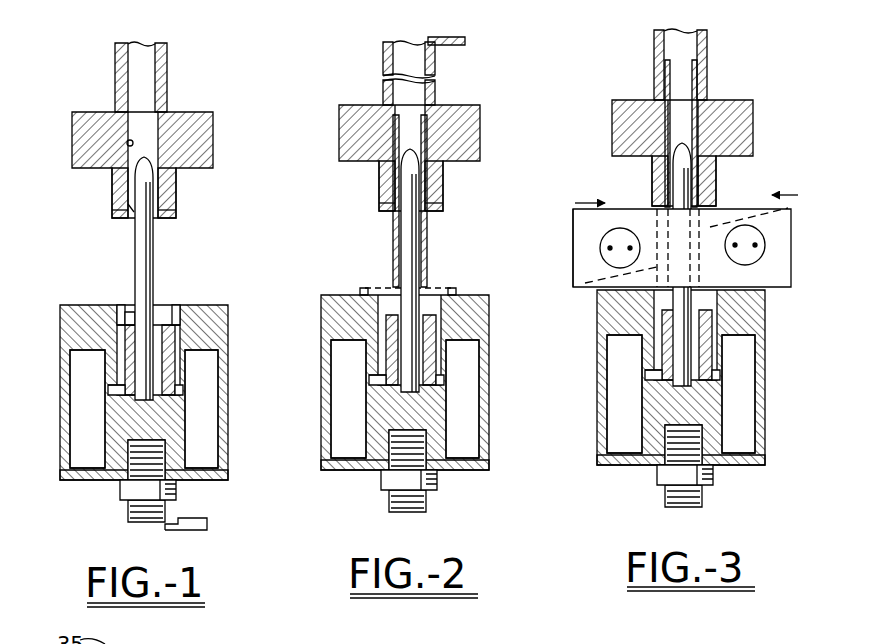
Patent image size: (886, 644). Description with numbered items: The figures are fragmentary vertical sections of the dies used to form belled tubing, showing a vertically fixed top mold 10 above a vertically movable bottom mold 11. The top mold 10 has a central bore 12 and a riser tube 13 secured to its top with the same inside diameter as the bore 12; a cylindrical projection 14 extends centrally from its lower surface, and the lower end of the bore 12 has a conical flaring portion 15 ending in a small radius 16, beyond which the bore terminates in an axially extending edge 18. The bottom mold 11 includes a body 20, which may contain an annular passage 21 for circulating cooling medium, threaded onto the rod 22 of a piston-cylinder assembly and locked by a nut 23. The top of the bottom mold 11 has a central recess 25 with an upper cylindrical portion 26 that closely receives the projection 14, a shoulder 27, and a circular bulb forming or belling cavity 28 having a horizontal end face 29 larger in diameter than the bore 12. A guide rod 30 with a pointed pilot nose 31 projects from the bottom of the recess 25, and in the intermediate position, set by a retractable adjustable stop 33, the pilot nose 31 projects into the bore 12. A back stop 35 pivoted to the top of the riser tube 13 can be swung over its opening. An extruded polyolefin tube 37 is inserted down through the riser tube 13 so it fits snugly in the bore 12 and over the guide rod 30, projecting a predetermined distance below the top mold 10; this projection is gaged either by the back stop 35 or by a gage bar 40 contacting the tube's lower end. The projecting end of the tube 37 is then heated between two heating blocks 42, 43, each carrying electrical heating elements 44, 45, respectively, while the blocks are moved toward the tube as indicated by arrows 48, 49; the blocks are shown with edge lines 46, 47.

In FIG. 1, the top mold 10 is at (190, 106).
In FIG. 2, the top mold 10 is at (474, 98).
In FIG. 3, the top mold 10 is at (749, 94).
In FIG. 1, the bottom mold 11 is at (230, 474).
In FIG. 2, the bottom mold 11 is at (491, 442).
In FIG. 3, the bottom mold 11 is at (771, 421).
In FIG. 1, the central bore 12 is at (125, 143).
In FIG. 1, the riser tube 13 is at (117, 52).
In FIG. 2, the riser tube 13 is at (383, 48).
In FIG. 3, the riser tube 13 is at (656, 35).
In FIG. 1, the cylindrical projection 14 is at (178, 192).
In FIG. 2, the cylindrical projection 14 is at (442, 185).
In FIG. 3, the cylindrical projection 14 is at (716, 178).
In FIG. 1, the conical flaring portion 15 is at (134, 212).
In FIG. 2, the conical flaring portion 15 is at (442, 212).
In FIG. 1, the small radius 16 is at (112, 212).
In FIG. 2, the small radius 16 is at (379, 212).
In FIG. 1, the axially extending edge 18 is at (176, 214).
In FIG. 1, the body 20 is at (62, 478).
In FIG. 2, the body 20 is at (468, 472).
In FIG. 3, the body 20 is at (750, 467).
In FIG. 1, the annular passage 21 is at (210, 415).
In FIG. 2, the annular passage 21 is at (345, 432).
In FIG. 3, the annular passage 21 is at (620, 410).
In FIG. 1, the rod 22 is at (128, 518).
In FIG. 2, the rod 22 is at (390, 508).
In FIG. 3, the rod 22 is at (660, 500).
In FIG. 1, the nut 23 is at (118, 490).
In FIG. 2, the nut 23 is at (378, 483).
In FIG. 3, the nut 23 is at (648, 478).
In FIG. 1, the central recess 25 is at (170, 302).
In FIG. 1, the upper cylindrical portion 26 is at (122, 305).
In FIG. 1, the shoulder 27 is at (66, 313).
In FIG. 1, the belling cavity 28 is at (170, 378).
In FIG. 2, the belling cavity 28 is at (432, 373).
In FIG. 3, the belling cavity 28 is at (705, 365).
In FIG. 1, the end face 29 is at (120, 378).
In FIG. 2, the end face 29 is at (345, 325).
In FIG. 3, the end face 29 is at (660, 332).
In FIG. 1, the guide rod 30 is at (152, 255).
In FIG. 2, the guide rod 30 is at (420, 245).
In FIG. 3, the guide rod 30 is at (685, 335).
In FIG. 1, the pilot nose 31 is at (118, 185).
In FIG. 2, the pilot nose 31 is at (378, 183).
In FIG. 3, the pilot nose 31 is at (651, 176).
In FIG. 1, the retractable adjustable stop 33 is at (212, 525).
In FIG. 2, the back stop 35 is at (455, 38).
In FIG. 2, the tube 37 is at (393, 245).
In FIG. 3, the tube 37 is at (672, 65).
In FIG. 2, the gage bar 40 is at (362, 289).
In FIG. 3, the heating block 42 is at (575, 228).
In FIG. 3, the heating block 43 is at (793, 282).
In FIG. 3, the electrical heating element 44 is at (600, 250).
In FIG. 3, the electrical heating element 45 is at (766, 247).
In FIG. 3, the left edge line 46 is at (580, 285).
In FIG. 3, the right edge line 47 is at (792, 212).
In FIG. 3, the motion arrow 48 is at (575, 203).
In FIG. 3, the motion arrow 49 is at (798, 195).